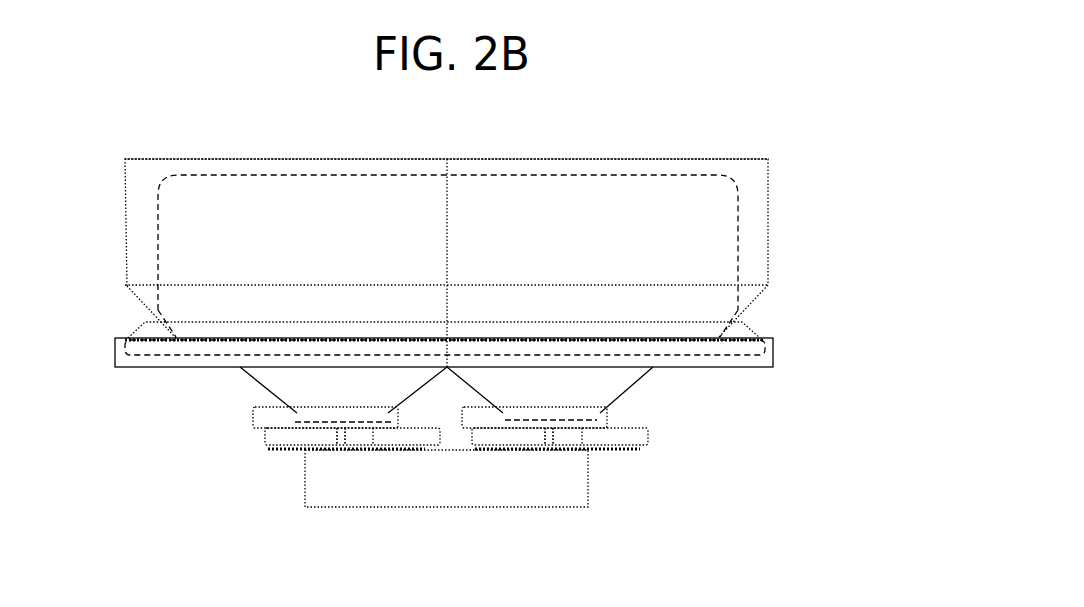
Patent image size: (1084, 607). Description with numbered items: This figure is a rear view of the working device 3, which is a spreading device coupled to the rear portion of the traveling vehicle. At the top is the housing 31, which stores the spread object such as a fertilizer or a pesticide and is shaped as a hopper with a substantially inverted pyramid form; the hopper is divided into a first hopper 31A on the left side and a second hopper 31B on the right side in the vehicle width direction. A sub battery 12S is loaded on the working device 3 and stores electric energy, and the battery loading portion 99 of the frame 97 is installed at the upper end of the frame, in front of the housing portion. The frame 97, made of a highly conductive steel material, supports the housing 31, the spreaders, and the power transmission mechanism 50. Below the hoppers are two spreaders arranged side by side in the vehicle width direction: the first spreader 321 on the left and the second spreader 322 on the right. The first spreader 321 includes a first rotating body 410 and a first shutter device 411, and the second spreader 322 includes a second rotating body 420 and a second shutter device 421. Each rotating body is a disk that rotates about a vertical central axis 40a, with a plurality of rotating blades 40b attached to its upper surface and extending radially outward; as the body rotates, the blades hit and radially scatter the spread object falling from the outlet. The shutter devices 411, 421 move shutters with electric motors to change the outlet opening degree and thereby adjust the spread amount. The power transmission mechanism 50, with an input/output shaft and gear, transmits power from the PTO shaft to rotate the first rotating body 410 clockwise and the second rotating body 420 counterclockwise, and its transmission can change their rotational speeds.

The working device 3 is at (712, 124).
The housing 31 is at (238, 156).
The first hopper 31A is at (385, 158).
The second hopper 31B is at (593, 158).
The sub battery 12S is at (155, 205).
The battery loading portion 99 is at (126, 332).
The frame 97 is at (753, 368).
The first spreader 321 is at (276, 462).
The second spreader 322 is at (636, 457).
The first shutter device 411 is at (296, 414).
The first rotating body 410 is at (297, 452).
The second shutter device 421 is at (594, 453).
The second rotating body 420 is at (590, 452).
The central axis 40a is at (348, 452).
The rotating blade 40b is at (265, 436).
The power transmission mechanism 50 is at (592, 508).